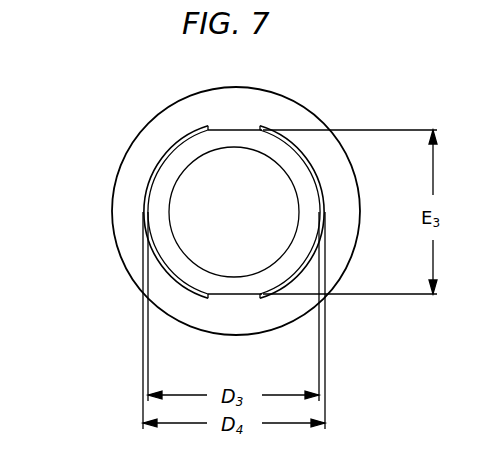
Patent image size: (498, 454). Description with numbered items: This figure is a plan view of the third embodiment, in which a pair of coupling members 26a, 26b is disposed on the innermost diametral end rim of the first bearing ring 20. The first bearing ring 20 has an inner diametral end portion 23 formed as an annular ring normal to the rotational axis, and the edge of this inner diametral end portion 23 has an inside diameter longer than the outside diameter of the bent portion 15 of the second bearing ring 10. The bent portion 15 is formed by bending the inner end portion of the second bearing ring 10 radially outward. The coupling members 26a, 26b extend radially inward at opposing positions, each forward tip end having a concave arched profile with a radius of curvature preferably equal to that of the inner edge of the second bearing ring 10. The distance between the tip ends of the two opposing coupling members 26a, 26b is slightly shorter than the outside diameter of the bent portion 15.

The second bearing ring 10 is at (307, 205).
The bent portion 15 is at (148, 188).
The first bearing ring 20 is at (337, 172).
The inner diametral end portion 23 is at (168, 145).
The coupling member 26a is at (229, 130).
The coupling member 26b is at (229, 294).